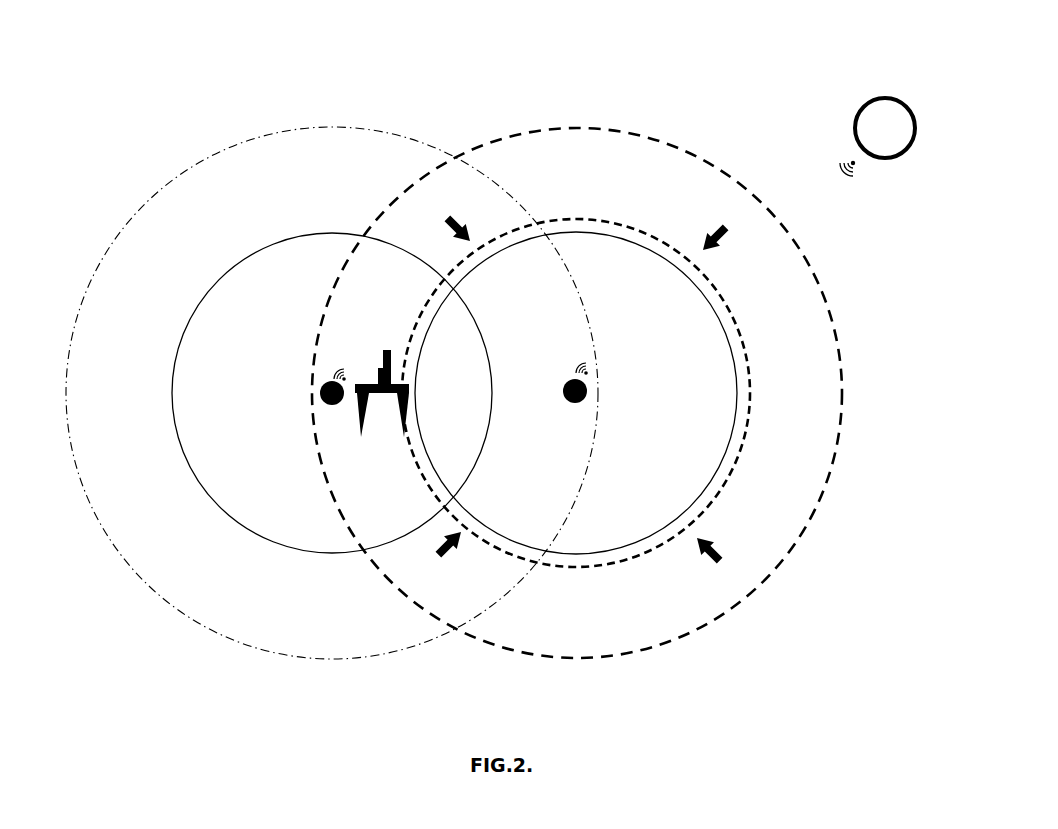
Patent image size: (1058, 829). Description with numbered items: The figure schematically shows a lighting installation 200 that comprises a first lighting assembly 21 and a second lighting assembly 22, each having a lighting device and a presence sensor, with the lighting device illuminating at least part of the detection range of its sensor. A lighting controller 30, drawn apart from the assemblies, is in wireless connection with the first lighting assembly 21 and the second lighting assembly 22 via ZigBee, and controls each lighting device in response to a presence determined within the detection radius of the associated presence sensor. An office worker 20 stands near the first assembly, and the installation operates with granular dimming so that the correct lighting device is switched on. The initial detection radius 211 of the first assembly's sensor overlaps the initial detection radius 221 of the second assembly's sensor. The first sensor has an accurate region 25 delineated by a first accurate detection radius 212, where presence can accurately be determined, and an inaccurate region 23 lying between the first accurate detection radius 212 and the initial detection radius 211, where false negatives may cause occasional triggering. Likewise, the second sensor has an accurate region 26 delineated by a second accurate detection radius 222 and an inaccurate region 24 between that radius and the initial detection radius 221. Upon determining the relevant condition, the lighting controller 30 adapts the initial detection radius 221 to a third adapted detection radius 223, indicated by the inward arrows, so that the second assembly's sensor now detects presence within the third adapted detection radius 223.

The lighting installation 200 is at (414, 72).
The office worker 20 is at (360, 384).
The first lighting assembly 21 is at (318, 397).
The second lighting assembly 22 is at (588, 386).
The inaccurate region 23 is at (332, 401).
The inaccurate region 24 is at (577, 412).
The accurate region 25 is at (332, 386).
The accurate region 26 is at (599, 359).
The lighting controller 30 is at (897, 158).
The initial detection radius 211 is at (85, 292).
The first accurate detection radius 212 is at (219, 278).
The initial detection radius 221 is at (706, 160).
The second accurate detection radius 222 is at (645, 248).
The third adapted detection radius 223 is at (583, 218).